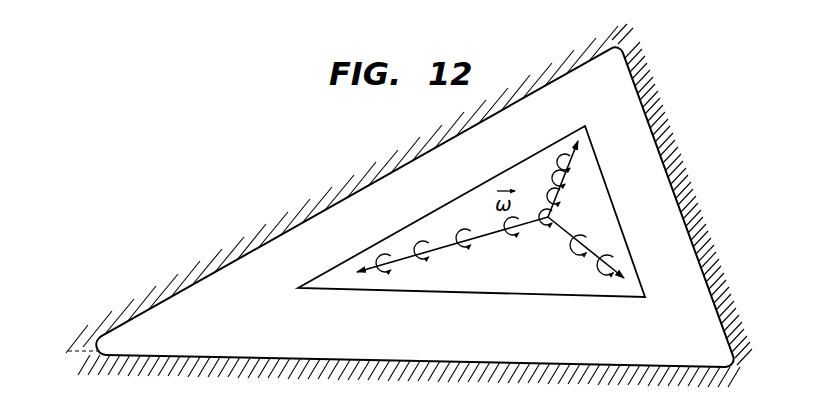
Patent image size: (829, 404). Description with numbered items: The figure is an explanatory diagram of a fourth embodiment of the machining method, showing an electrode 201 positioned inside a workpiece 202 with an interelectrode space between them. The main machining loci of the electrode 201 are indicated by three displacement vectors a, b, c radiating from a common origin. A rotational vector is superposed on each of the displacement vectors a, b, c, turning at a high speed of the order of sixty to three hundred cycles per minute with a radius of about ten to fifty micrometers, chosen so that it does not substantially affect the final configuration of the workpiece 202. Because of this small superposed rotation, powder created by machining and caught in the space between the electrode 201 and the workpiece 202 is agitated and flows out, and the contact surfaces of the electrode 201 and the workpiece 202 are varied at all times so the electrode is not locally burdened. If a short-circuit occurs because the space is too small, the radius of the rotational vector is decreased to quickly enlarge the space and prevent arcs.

The electrode 201 is at (600, 212).
The workpiece 202 is at (650, 118).
The displacement vector a is at (620, 125).
The displacement vector b is at (356, 272).
The displacement vector c is at (669, 265).